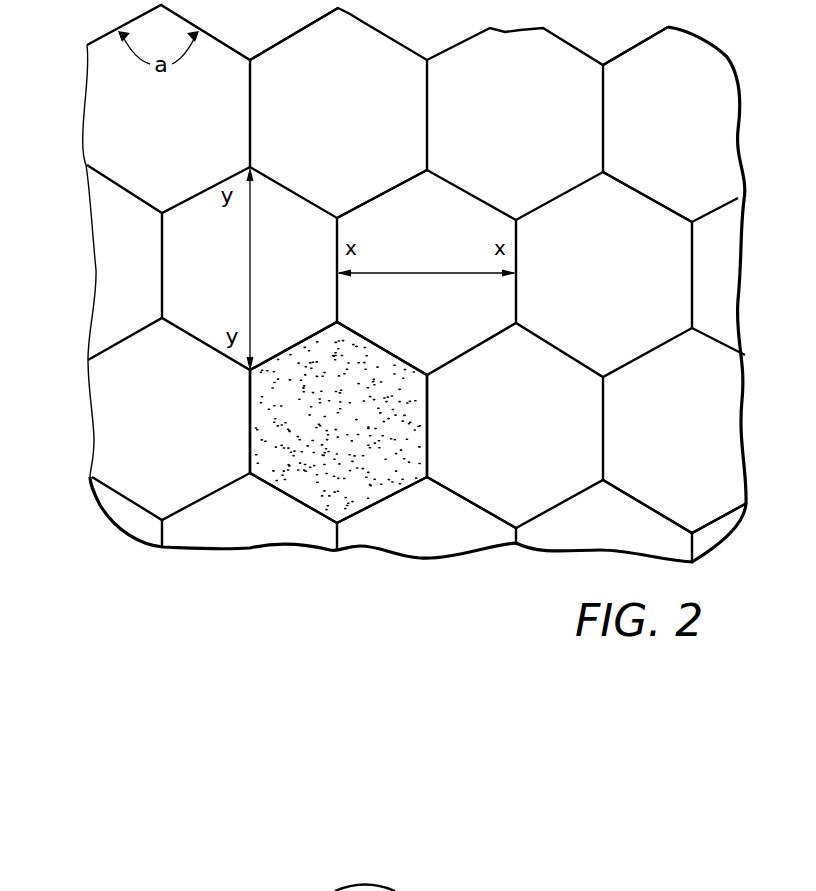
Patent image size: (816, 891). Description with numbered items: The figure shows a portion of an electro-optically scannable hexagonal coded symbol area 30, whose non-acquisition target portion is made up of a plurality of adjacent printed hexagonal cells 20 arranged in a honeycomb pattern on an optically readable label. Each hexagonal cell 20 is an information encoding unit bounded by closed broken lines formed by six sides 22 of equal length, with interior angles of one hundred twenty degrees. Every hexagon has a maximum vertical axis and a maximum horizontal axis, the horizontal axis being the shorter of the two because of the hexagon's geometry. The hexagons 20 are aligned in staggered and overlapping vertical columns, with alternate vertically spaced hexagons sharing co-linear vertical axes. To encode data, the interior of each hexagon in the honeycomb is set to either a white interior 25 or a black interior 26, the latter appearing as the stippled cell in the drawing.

The hexagonal cell 20 is at (115, 404).
The sides 22 is at (300, 30).
The white interior 25 is at (503, 492).
The black interior 26 is at (327, 488).
The hexagonal coded symbol area 30 is at (103, 270).